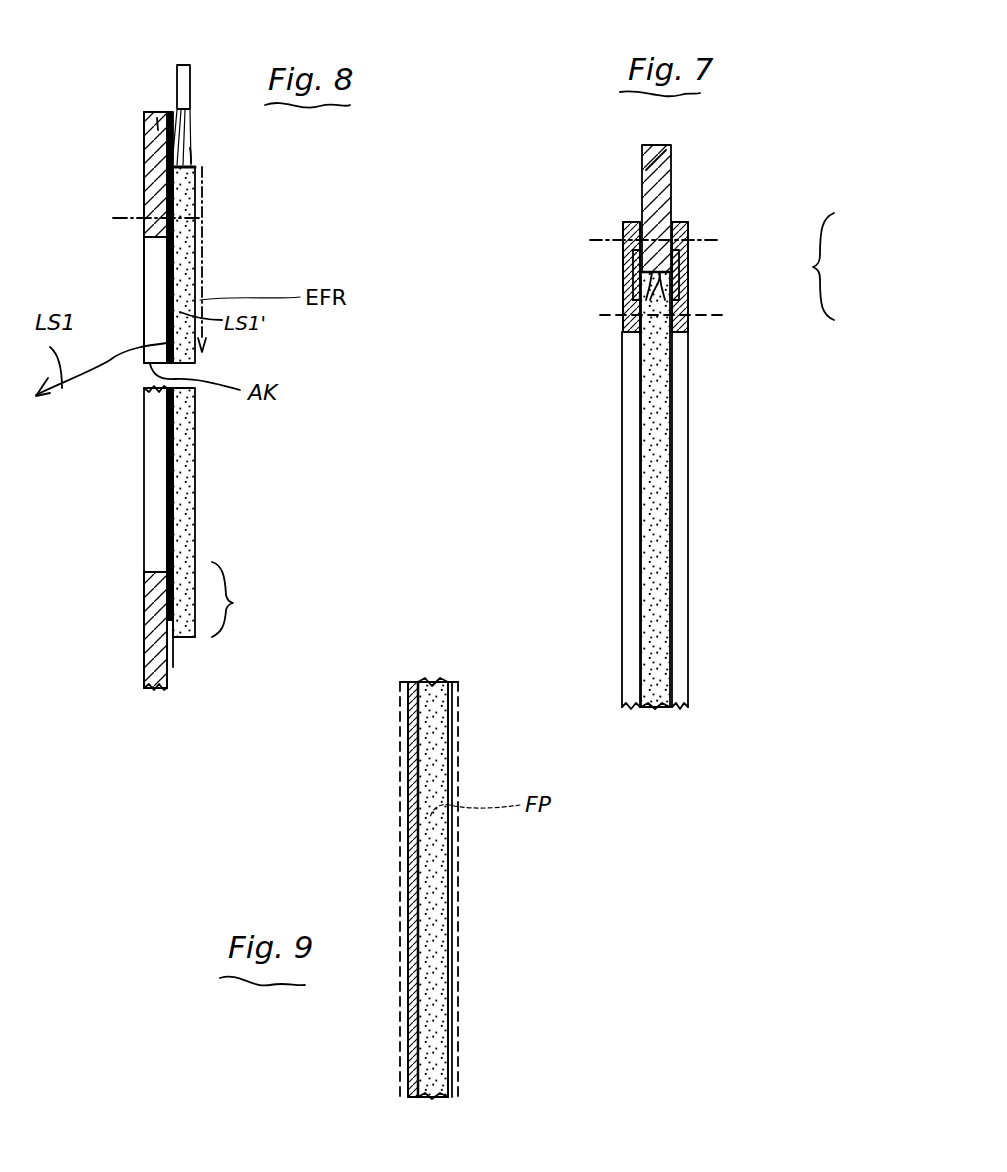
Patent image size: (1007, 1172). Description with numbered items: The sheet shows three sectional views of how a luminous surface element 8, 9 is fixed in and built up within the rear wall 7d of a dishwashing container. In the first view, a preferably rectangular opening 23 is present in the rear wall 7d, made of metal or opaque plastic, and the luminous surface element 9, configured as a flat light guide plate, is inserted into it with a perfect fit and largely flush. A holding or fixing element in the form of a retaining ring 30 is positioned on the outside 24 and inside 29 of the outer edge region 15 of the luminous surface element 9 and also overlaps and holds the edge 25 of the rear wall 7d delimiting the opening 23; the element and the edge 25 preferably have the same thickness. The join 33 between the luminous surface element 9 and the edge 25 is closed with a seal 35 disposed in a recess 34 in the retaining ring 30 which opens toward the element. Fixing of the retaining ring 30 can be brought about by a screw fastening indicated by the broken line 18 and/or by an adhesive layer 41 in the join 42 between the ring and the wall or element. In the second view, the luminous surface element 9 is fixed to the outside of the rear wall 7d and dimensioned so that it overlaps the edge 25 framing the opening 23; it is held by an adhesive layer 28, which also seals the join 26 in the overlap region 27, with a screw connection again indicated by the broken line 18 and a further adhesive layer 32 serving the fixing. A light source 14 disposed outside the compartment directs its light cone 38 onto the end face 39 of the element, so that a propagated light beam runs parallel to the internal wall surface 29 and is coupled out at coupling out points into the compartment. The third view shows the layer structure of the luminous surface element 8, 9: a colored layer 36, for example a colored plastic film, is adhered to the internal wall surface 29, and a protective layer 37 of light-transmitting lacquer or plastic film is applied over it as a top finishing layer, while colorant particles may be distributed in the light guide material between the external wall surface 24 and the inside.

In FIG. 8, the rear wall 7d is at (150, 628).
In FIG. 7, the rear wall 7d is at (663, 206).
In FIG. 9, the luminous surface element 8 is at (430, 885).
In FIG. 8, the luminous surface element 9 is at (190, 283).
In FIG. 7, the luminous surface element 9 is at (660, 400).
In FIG. 9, the luminous surface element 9 is at (433, 889).
In FIG. 8, the light source 14 is at (185, 78).
In FIG. 7, the edge region 15 is at (843, 266).
In FIG. 8, the line 18 is at (202, 209).
In FIG. 7, the line 18 is at (610, 236).
In FIG. 8, the opening 23 is at (147, 258).
In FIG. 7, the opening 23 is at (660, 278).
In FIG. 8, the outside or external wall surface 24 is at (173, 667).
In FIG. 7, the outside or external wall surface 24 is at (670, 596).
In FIG. 9, the outside or external wall surface 24 is at (448, 945).
In FIG. 8, the edge 25 is at (145, 193).
In FIG. 7, the edge 25 is at (653, 215).
In FIG. 8, the join 26 is at (180, 139).
In FIG. 8, the overlap region 27 is at (250, 583).
In FIG. 8, the adhesive layer 28 is at (178, 223).
In FIG. 7, the inside or internal wall surface 29 is at (640, 625).
In FIG. 9, the inside or internal wall surface 29 is at (410, 1005).
In FIG. 7, the retaining ring 30 is at (628, 248).
In FIG. 8, the adhesive layer 32 is at (166, 570).
In FIG. 7, the join 33 is at (628, 308).
In FIG. 7, the recess 34 is at (634, 261).
In FIG. 7, the seal 35 is at (678, 267).
In FIG. 9, the colored layer 36 is at (413, 682).
In FIG. 9, the protective layer 37 is at (409, 743).
In FIG. 8, the light cone 38 is at (183, 137).
In FIG. 8, the end face 39 is at (188, 165).
In FIG. 7, the adhesive layer 41 is at (689, 240).
In FIG. 7, the join 42 is at (655, 277).